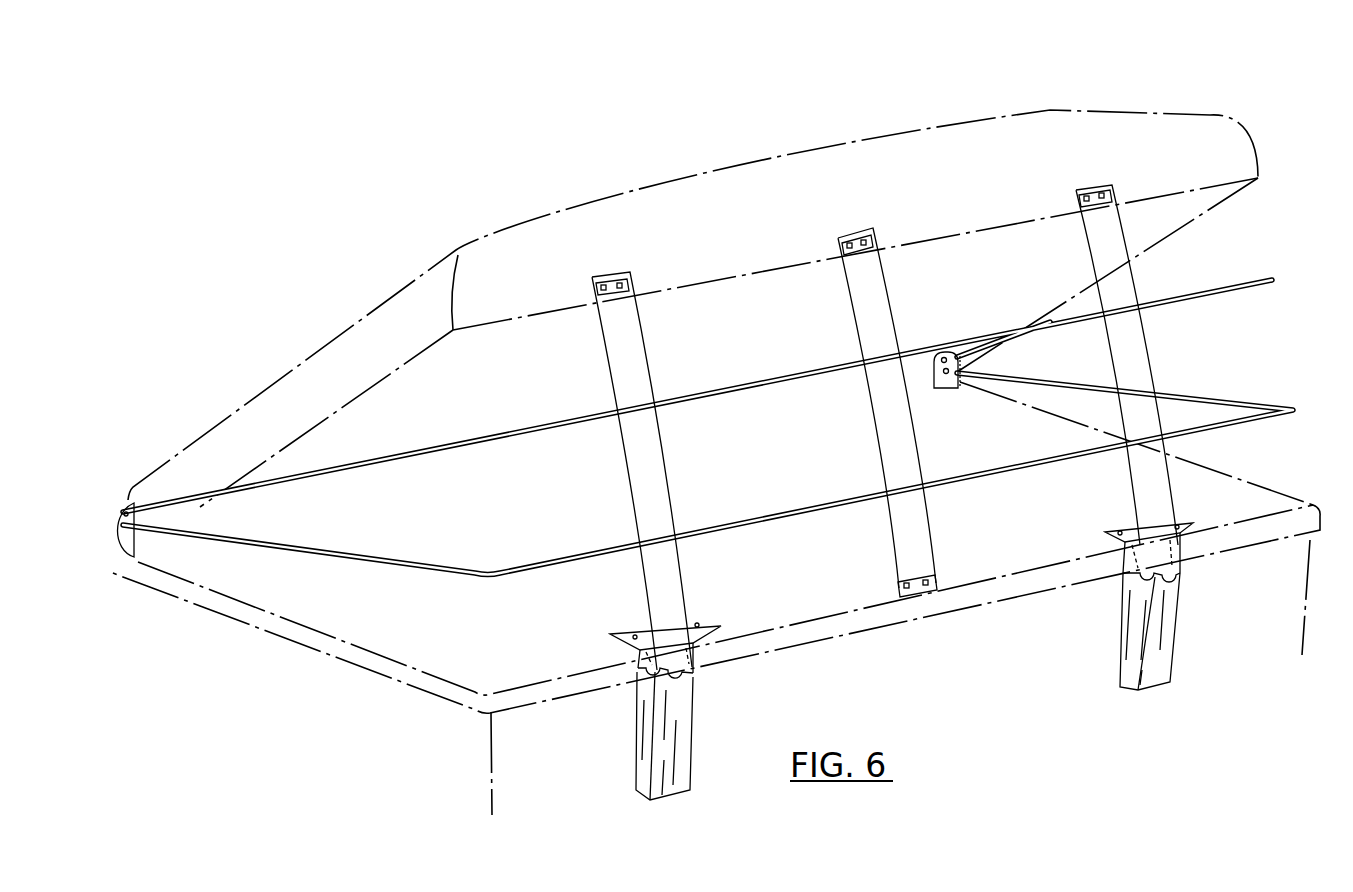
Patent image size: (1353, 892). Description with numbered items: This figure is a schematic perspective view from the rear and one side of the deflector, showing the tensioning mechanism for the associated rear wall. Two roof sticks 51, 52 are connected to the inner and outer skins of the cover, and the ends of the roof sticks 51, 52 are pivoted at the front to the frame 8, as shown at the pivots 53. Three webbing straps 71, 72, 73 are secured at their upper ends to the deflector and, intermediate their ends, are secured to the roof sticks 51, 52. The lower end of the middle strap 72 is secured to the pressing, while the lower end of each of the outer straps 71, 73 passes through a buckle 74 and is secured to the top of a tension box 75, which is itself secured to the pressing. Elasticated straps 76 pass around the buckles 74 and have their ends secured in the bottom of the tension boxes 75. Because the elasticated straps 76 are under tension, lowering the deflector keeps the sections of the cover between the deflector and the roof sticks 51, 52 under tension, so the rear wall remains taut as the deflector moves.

The frame 8 is at (454, 696).
The roof stick 51 is at (471, 439).
The roof stick 52 is at (463, 570).
The pivot 53 is at (115, 527).
The webbing strap 71 is at (641, 368).
The webbing strap 72 is at (859, 345).
The webbing strap 73 is at (1094, 259).
The buckle 74 is at (697, 677).
The tension box 75 is at (708, 626).
The elasticated strap 76 is at (645, 770).